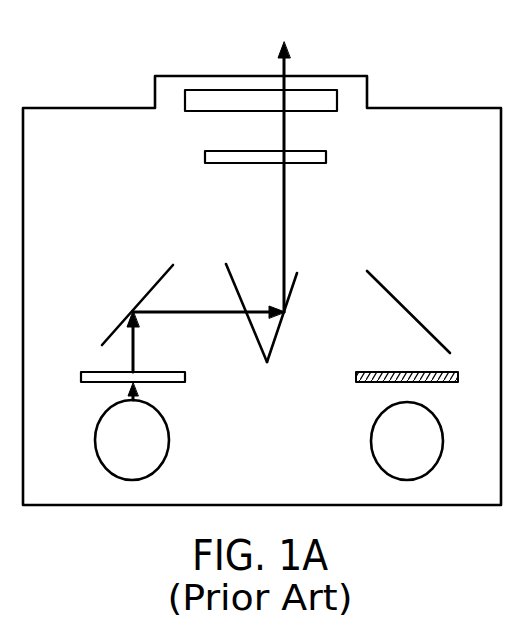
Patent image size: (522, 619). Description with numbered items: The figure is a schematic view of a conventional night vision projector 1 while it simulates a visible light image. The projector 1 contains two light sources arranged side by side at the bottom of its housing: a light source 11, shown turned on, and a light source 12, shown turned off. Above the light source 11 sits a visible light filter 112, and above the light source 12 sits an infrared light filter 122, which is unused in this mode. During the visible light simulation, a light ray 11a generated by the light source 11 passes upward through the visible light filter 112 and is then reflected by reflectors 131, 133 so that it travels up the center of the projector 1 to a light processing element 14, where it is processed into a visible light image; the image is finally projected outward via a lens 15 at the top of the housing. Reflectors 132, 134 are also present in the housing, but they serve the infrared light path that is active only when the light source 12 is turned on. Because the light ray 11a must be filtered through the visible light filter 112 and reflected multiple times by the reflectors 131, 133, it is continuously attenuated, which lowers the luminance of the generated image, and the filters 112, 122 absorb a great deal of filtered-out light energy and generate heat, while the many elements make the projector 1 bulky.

The night vision projector 1 is at (411, 97).
The light source 11 is at (158, 442).
The light ray 11a is at (283, 190).
The visible light filter 112 is at (157, 377).
The light source 12 is at (430, 443).
The infrared light filter 122 is at (435, 382).
The reflector 131 is at (150, 292).
The reflector 132 is at (388, 288).
The reflector 133 is at (294, 287).
The reflector 134 is at (228, 278).
The light processing element 14 is at (300, 157).
The lens 15 is at (326, 103).